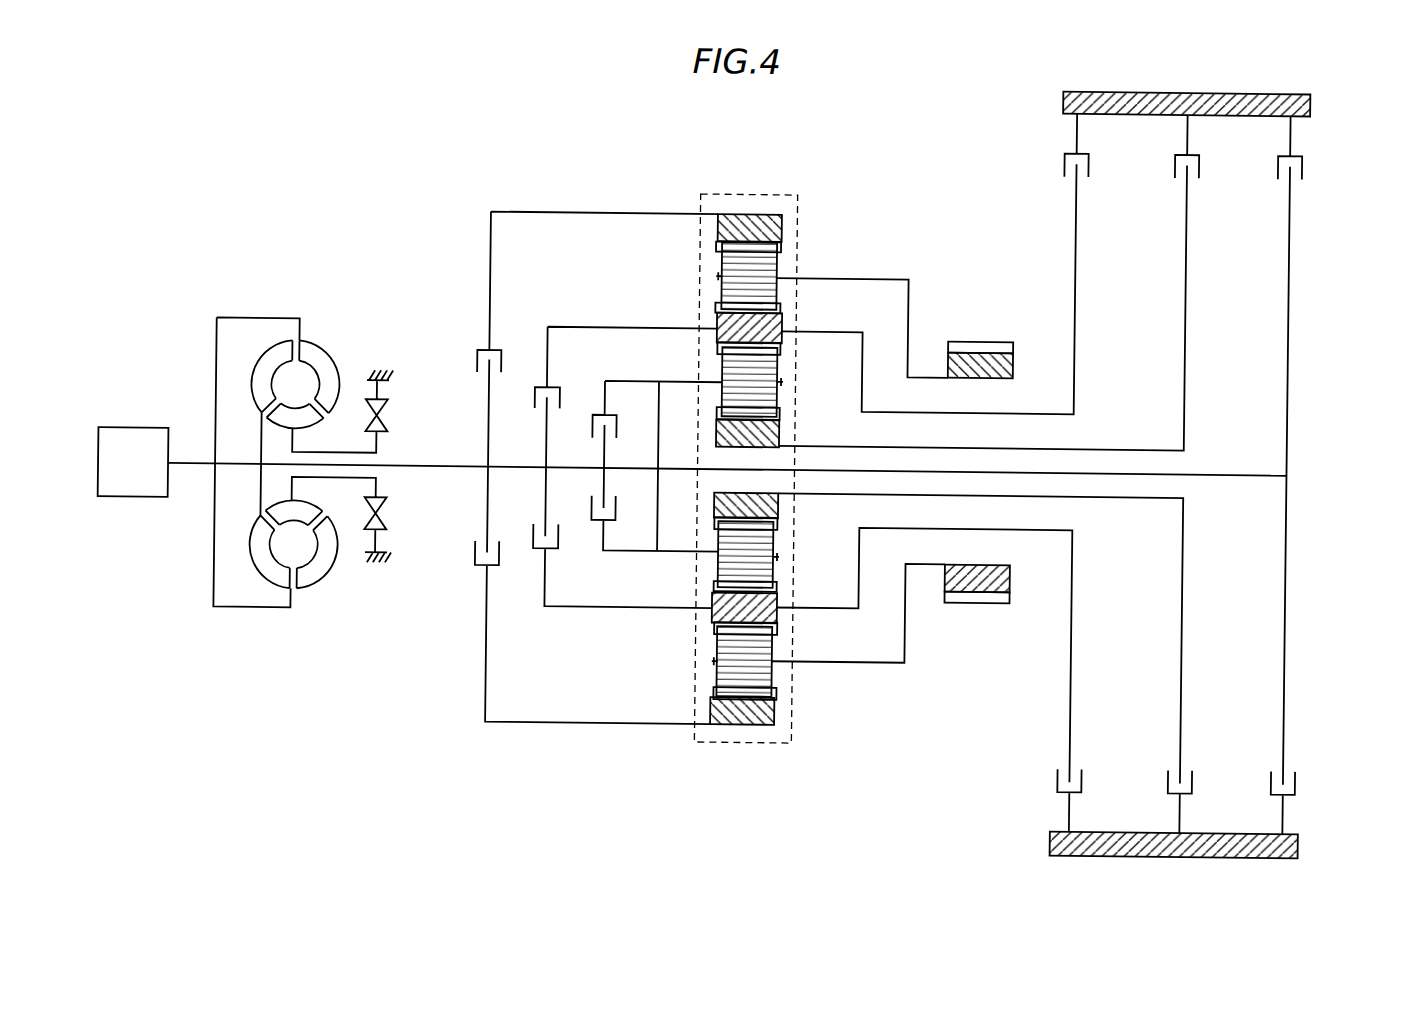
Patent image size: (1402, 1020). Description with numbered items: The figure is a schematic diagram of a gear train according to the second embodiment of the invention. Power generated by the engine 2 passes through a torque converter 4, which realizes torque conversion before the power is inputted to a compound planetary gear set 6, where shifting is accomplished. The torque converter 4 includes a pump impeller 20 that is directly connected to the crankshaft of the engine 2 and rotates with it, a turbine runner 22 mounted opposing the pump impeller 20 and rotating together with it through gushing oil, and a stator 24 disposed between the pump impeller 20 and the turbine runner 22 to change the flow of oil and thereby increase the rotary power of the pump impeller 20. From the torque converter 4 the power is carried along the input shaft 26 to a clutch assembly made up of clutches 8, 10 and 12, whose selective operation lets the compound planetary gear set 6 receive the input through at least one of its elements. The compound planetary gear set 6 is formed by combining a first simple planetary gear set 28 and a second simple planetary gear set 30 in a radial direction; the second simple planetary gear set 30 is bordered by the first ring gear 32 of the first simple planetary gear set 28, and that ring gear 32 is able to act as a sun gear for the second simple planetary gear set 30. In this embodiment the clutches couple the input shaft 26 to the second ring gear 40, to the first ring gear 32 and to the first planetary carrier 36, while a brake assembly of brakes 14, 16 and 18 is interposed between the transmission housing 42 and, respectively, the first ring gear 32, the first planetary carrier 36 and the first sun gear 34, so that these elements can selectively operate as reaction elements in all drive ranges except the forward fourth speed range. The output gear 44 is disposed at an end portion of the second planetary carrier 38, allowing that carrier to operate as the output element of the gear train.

The engine 2 is at (136, 433).
The torque converter 4 is at (323, 322).
The compound planetary gear set 6 is at (640, 291).
The clutch 8 is at (477, 350).
The clutch 10 is at (536, 387).
The clutch 12 is at (596, 414).
The brake 14 is at (1076, 150).
The brake 16 is at (1290, 150).
The brake 18 is at (1186, 150).
The pump impeller 20 is at (320, 354).
The turbine runner 22 is at (268, 362).
The stator 24 is at (305, 423).
The input shaft 26 is at (424, 468).
The first simple planetary gear set 28 is at (700, 336).
The second simple planetary gear set 30 is at (697, 296).
The first ring gear 32 is at (782, 330).
The first sun gear 34 is at (780, 436).
The first planetary carrier 36 is at (660, 381).
The second planetary carrier 38 is at (716, 276).
The second ring gear 40 is at (780, 228).
The transmission housing 42 is at (1190, 88).
The output gear 44 is at (978, 338).